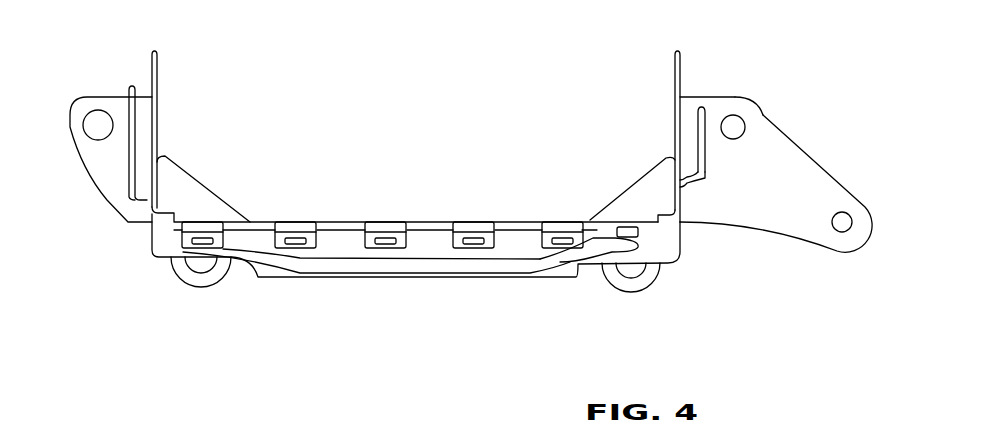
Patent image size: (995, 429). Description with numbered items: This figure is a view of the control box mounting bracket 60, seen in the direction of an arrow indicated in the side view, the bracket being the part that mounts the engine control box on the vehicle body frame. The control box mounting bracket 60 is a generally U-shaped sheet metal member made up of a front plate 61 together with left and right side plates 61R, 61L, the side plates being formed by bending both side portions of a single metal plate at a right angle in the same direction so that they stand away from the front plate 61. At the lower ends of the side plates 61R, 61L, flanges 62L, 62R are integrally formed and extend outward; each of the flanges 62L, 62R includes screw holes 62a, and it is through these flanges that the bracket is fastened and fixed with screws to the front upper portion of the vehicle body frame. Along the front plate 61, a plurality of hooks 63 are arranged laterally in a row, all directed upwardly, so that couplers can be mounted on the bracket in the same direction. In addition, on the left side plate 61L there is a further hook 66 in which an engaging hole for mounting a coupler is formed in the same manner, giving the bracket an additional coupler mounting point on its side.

The control box mounting bracket 60 is at (441, 207).
The front plate 61 is at (417, 280).
The right side plate 61R is at (152, 70).
The left side plate 61L is at (680, 70).
The flange 62R is at (107, 203).
The flange 62L is at (760, 229).
The screw hole 62a is at (92, 117).
The hook 63 is at (202, 249).
The hook 66 is at (720, 97).